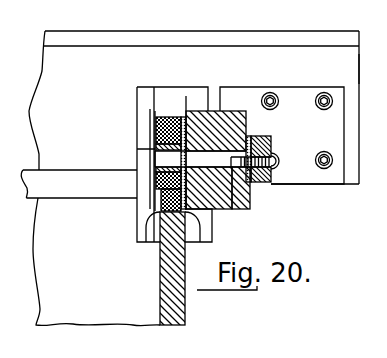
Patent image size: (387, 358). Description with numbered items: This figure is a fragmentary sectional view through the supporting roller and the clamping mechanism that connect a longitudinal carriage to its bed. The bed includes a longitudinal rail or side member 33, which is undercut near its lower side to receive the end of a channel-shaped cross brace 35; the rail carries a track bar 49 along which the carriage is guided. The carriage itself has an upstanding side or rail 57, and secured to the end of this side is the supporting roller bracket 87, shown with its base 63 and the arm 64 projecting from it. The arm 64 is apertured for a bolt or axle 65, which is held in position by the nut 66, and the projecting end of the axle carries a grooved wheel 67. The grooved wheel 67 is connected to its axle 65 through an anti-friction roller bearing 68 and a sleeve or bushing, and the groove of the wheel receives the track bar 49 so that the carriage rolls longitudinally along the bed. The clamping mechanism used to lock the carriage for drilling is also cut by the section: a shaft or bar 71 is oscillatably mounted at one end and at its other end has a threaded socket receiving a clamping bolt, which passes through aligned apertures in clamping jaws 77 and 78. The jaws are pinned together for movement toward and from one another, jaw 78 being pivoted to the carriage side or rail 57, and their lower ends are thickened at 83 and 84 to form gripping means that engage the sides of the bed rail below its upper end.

The frame 87 is at (300, 33).
The side or rail 57 is at (348, 63).
The base 63 is at (327, 116).
The arm 64 is at (241, 119).
The bolt or axle 65 is at (228, 205).
The nut 66 is at (269, 184).
The grooved wheel 67 is at (180, 116).
The anti-friction roller bearing 68 is at (188, 93).
The shaft or bar 71 is at (85, 192).
The clamping jaw 77 is at (137, 146).
The clamping jaw 78 is at (197, 84).
The thickened lower end 83 is at (147, 232).
The thickened lower end 84 is at (187, 239).
The track bar 49 is at (157, 207).
The longitudinal rail or side member 33 is at (172, 307).
The cross brace 35 is at (68, 313).